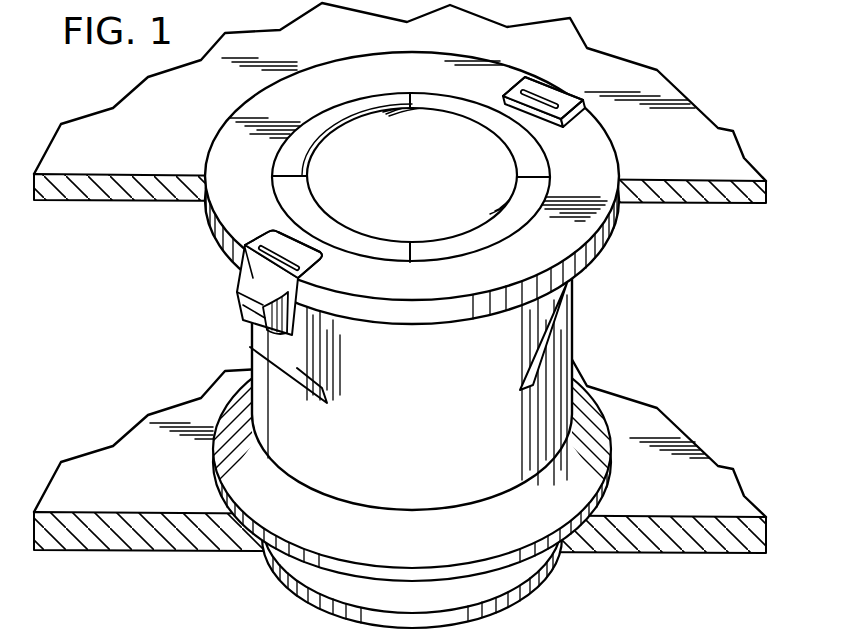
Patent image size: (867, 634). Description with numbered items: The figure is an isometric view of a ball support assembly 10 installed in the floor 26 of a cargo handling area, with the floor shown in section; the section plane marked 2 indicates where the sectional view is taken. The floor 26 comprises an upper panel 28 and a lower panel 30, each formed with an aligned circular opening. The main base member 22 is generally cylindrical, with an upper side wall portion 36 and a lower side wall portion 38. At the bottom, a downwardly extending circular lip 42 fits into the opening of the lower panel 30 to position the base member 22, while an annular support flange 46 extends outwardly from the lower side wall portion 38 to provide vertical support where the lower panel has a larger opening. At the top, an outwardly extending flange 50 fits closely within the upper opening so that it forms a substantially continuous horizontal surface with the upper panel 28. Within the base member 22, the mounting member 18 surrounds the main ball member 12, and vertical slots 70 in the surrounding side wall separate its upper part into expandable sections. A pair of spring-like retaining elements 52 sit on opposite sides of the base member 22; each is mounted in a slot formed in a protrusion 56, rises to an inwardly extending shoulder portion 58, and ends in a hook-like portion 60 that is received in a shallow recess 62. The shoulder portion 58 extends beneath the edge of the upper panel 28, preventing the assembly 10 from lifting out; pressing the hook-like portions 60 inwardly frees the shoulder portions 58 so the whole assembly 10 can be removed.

The ball support assembly 10 is at (640, 268).
The main ball member 12 is at (423, 168).
The mounting member 18 is at (556, 190).
The main base member 22 is at (580, 343).
The floor 26 is at (699, 88).
The upper panel 28 is at (720, 126).
The lower panel 30 is at (660, 430).
The upper side wall portion 36 is at (567, 318).
The lower side wall portion 38 is at (580, 410).
The circular lip 42 is at (490, 618).
The annular support flange 46 is at (590, 482).
The outwardly extending flange 50 is at (618, 165).
The spring-like retaining element 52 is at (247, 318).
The protrusion 56 is at (335, 395).
The shoulder portion 58 is at (253, 278).
The hook-like portion 60 is at (320, 261).
The recess or slot 62 is at (262, 238).
The vertical slot 70 is at (295, 170).
The section line 2- 2 is at (657, 42).